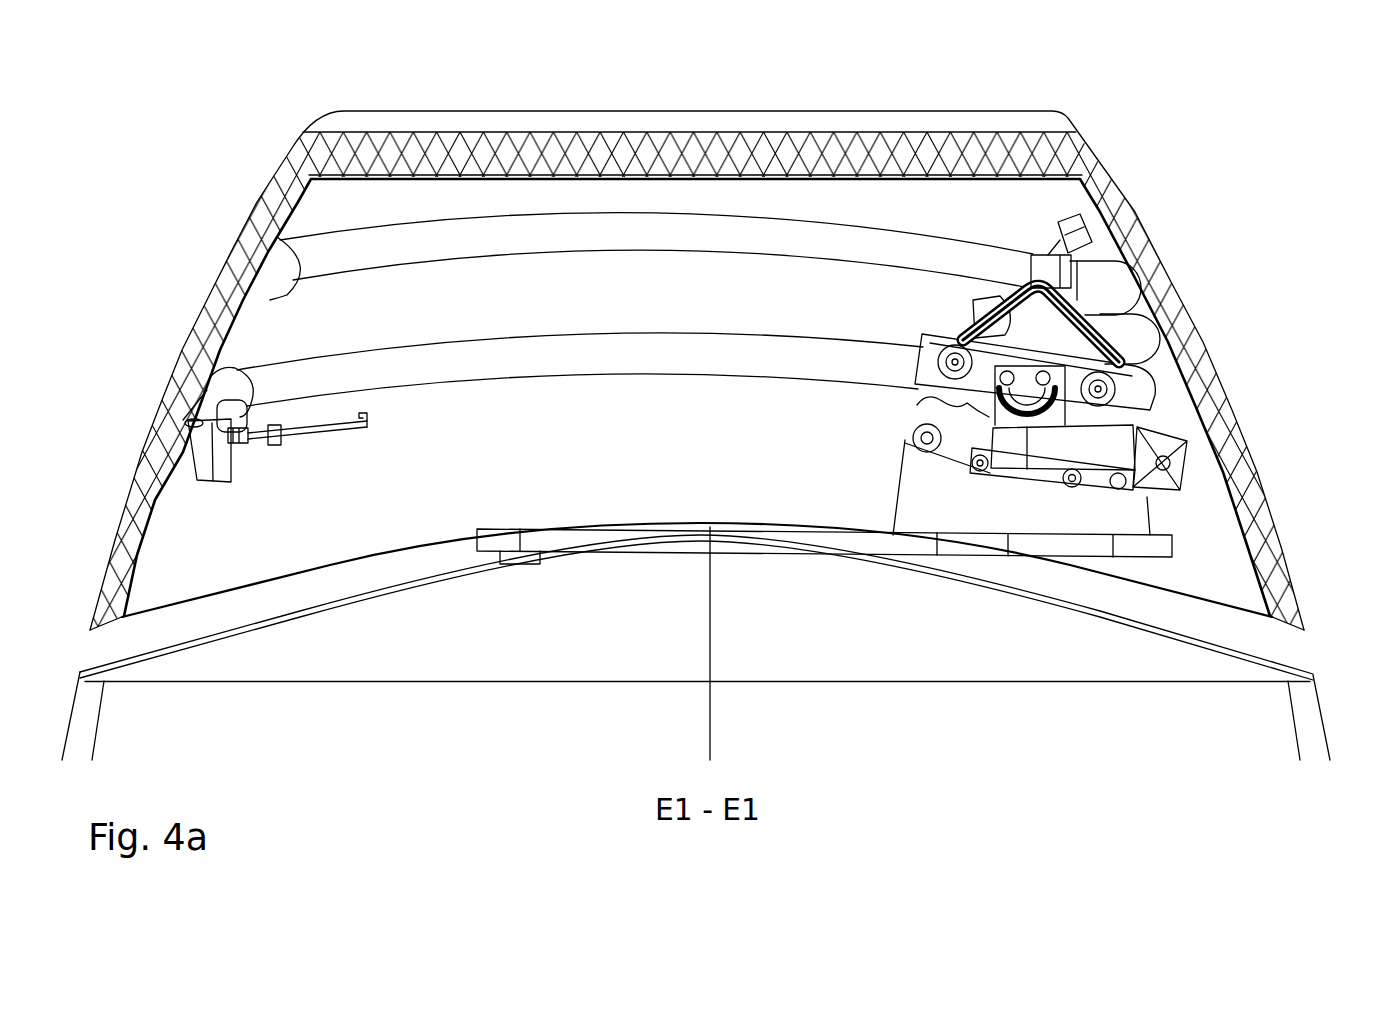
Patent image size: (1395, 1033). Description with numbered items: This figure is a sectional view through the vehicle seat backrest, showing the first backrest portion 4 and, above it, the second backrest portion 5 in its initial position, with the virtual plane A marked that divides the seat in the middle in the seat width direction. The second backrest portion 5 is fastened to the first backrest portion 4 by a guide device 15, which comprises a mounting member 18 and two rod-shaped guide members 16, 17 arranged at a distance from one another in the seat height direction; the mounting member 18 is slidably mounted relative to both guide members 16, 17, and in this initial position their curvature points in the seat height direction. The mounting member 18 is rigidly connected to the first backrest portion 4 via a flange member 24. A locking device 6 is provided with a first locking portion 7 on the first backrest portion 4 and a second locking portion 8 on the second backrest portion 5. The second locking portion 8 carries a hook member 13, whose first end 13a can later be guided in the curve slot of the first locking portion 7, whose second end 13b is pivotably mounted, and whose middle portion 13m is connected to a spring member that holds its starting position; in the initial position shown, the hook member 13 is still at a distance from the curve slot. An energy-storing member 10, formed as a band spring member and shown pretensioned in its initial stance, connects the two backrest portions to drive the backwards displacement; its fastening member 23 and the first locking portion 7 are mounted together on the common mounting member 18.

The first backrest portion 4 is at (1338, 752).
The second backrest portion 5 is at (1272, 474).
The locking device 6 is at (482, 448).
The first locking portion 7 is at (872, 427).
The second locking portion 8 is at (468, 411).
The energy-storing member 10 is at (1047, 450).
The hook member 13 is at (341, 445).
The first end of the hook member 13a is at (369, 418).
The second end of the hook member 13b is at (238, 457).
The middle portion of the hook member 13m is at (293, 440).
The guide device 15 is at (509, 198).
The guide member 16 is at (876, 246).
The guide member 17 is at (843, 361).
The mounting member 18 is at (1145, 392).
The fastening member 23 is at (1027, 402).
The flange member 24 is at (777, 550).
The virtual plane A is at (720, 640).